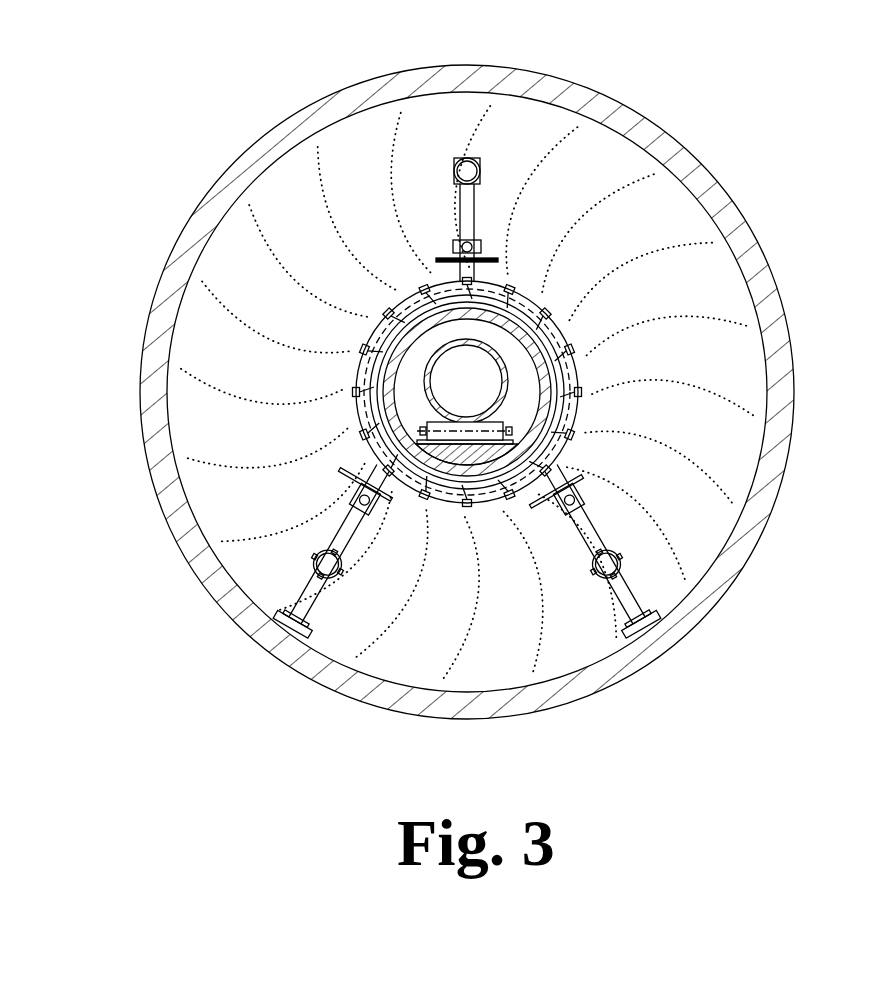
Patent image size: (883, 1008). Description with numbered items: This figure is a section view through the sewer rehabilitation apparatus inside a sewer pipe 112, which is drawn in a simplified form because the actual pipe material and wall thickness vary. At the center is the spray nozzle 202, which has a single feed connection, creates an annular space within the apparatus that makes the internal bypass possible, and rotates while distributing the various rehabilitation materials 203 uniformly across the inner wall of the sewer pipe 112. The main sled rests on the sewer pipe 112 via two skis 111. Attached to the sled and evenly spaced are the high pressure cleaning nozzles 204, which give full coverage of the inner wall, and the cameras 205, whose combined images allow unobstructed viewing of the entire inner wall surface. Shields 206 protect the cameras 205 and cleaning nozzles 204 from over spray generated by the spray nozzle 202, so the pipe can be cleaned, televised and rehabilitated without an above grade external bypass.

The skis 111 is at (304, 622).
The sewer pipe 112 is at (672, 150).
The spray nozzle 202 is at (596, 411).
The rehabilitation materials 203 is at (690, 300).
The high pressure cleaning nozzles 204 is at (343, 572).
The cameras 205 is at (556, 512).
The shields 206 is at (541, 470).